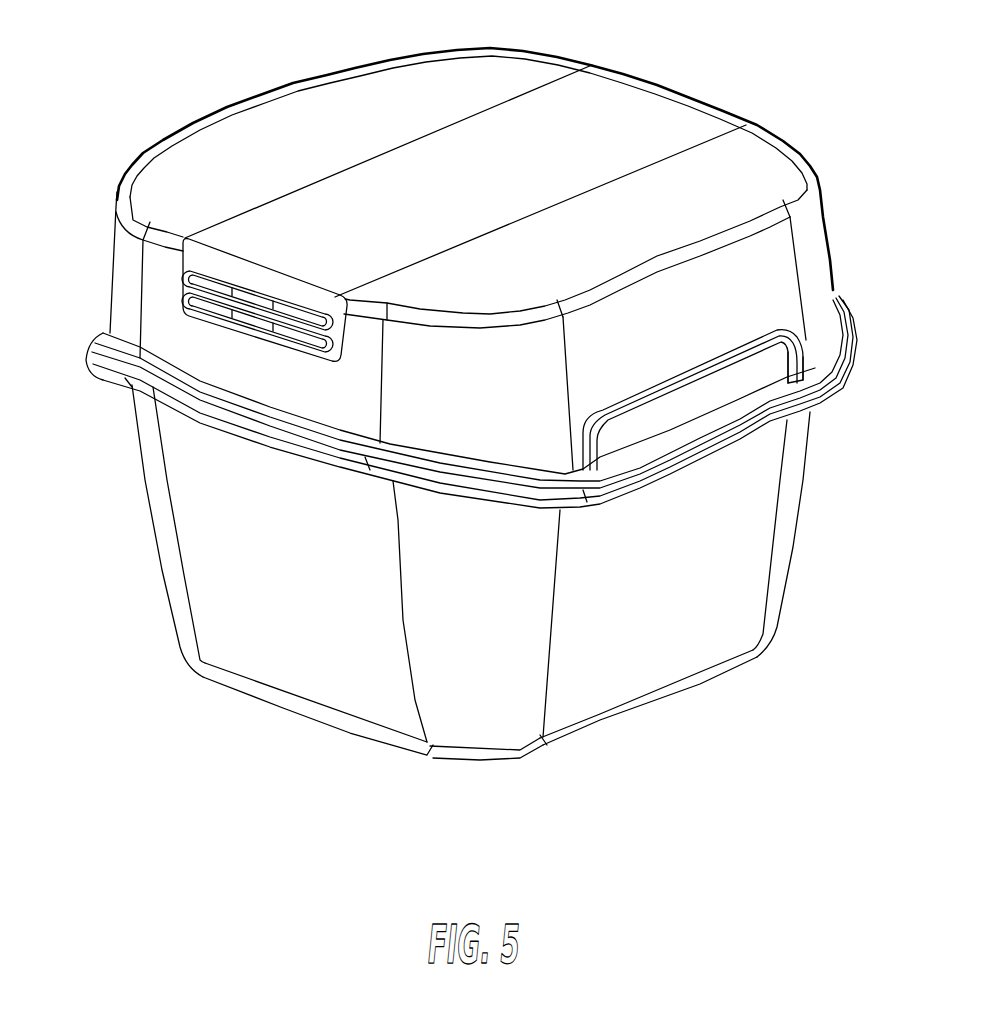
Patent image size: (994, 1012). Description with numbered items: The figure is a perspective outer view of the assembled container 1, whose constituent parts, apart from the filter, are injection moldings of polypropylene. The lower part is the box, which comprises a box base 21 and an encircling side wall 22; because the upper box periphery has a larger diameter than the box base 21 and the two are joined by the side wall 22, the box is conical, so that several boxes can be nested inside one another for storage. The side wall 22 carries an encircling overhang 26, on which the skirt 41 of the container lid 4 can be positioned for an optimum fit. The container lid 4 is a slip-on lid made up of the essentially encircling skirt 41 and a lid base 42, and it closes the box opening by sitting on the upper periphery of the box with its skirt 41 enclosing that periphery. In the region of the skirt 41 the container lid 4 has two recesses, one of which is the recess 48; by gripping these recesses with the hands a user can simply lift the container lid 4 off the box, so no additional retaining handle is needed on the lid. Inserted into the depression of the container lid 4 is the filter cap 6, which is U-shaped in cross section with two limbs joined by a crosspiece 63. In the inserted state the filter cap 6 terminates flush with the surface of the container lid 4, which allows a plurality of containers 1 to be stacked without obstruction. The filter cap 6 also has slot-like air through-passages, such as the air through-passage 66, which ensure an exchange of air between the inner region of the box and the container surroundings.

The container 1 is at (190, 779).
The container lid 4 is at (406, 53).
The filter cap 6 is at (658, 83).
The box base 21 is at (587, 737).
The side wall 22 is at (740, 563).
The encircling overhang 26 is at (763, 410).
The skirt 41 is at (125, 292).
The lid base 42 is at (740, 172).
The recess 48 is at (797, 360).
The crosspiece 63 is at (443, 174).
The air through-passage 66 is at (264, 300).